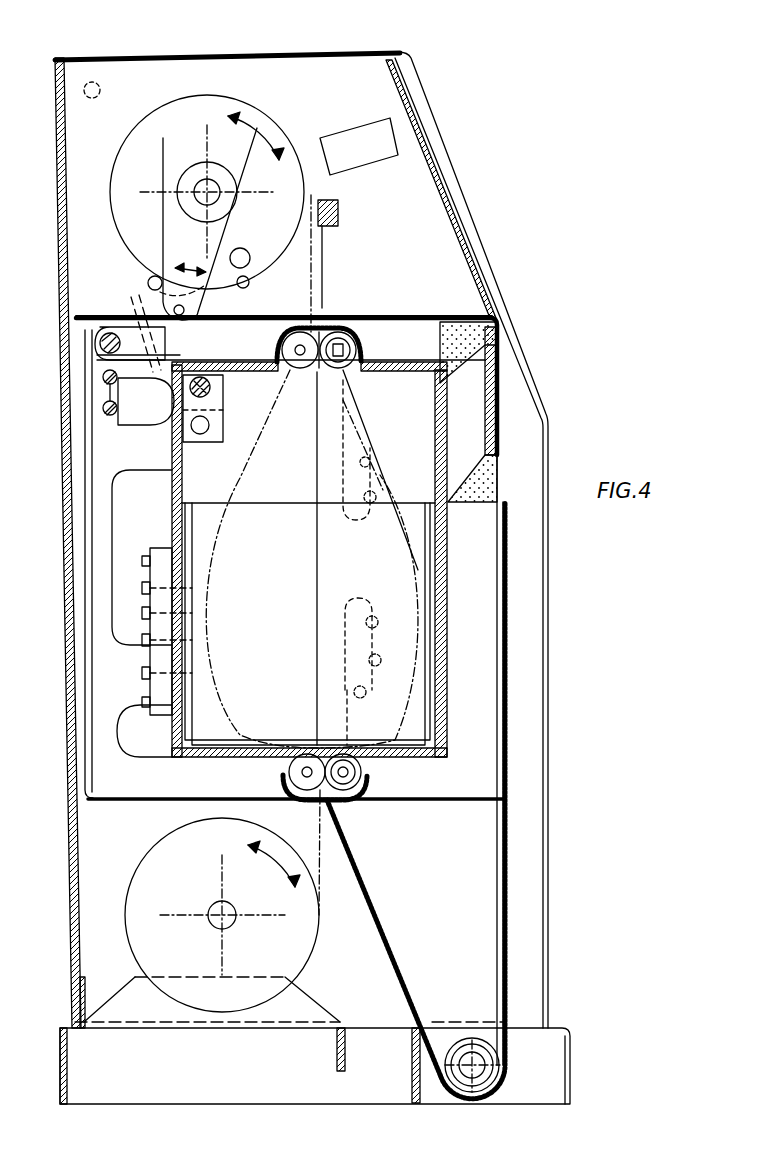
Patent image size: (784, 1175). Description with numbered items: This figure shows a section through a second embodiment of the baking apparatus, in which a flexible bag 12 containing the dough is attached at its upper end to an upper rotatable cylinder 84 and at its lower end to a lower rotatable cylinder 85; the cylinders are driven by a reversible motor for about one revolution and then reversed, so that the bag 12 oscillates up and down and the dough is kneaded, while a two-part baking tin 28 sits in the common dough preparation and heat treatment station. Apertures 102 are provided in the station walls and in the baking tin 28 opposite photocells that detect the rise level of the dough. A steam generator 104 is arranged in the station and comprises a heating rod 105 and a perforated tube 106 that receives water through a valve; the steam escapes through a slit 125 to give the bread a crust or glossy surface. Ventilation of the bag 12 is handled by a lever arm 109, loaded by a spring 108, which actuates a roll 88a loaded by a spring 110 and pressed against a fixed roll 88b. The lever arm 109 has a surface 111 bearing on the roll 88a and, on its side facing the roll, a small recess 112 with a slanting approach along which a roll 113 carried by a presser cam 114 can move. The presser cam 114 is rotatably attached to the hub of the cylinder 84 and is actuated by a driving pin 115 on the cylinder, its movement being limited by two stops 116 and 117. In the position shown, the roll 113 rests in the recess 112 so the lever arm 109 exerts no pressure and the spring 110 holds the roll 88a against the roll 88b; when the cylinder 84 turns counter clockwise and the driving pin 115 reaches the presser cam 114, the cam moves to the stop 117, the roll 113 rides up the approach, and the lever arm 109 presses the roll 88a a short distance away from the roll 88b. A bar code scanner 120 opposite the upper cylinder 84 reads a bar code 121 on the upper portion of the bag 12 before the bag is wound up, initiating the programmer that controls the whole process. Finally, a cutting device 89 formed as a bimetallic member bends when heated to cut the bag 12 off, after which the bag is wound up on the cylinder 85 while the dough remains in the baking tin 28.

The flexible bag 12 is at (395, 471).
The baking tin 28 is at (428, 655).
The upper rotatable cylinder 84 is at (275, 133).
The lower rotatable cylinder 85 is at (298, 942).
The spring-loaded roll 88a is at (332, 368).
The fixed roll 88b is at (298, 368).
The cutting device 89 is at (325, 290).
The apertures 102 is at (197, 660).
The steam generator 104 is at (230, 435).
The heating rod 105 is at (202, 447).
The tube 106 is at (173, 425).
The spring 108 is at (108, 392).
The lever arm 109 is at (124, 340).
The spring 110 is at (307, 507).
The surface 111 is at (395, 316).
The recess 112 is at (330, 322).
The roll 113 is at (184, 310).
The presser cam 114 is at (175, 230).
The driving pin 115 is at (245, 258).
The stop 116 is at (150, 281).
The stop 117 is at (246, 283).
The bar code scanner 120 is at (370, 148).
The bar code 121 is at (206, 393).
The slit 125 is at (217, 350).